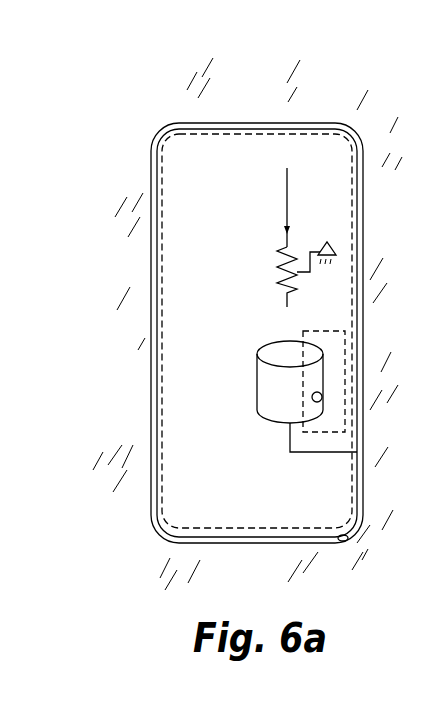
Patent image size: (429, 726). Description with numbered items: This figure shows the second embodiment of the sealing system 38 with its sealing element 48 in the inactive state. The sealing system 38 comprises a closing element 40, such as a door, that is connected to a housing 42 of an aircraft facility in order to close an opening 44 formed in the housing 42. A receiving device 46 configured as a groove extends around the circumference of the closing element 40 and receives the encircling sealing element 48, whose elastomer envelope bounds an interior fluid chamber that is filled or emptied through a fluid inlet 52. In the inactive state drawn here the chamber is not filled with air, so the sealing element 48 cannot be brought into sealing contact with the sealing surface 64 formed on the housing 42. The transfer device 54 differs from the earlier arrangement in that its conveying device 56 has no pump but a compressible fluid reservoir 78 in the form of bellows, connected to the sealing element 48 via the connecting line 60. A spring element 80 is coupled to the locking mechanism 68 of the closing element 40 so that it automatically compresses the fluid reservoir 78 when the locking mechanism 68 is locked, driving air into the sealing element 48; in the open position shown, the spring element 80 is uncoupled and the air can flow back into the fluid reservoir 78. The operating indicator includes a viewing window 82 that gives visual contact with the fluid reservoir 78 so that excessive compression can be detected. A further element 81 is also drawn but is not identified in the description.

The sealing system 38 is at (385, 122).
The closing element 40 is at (232, 157).
The housing 42 is at (322, 108).
The opening 44 is at (156, 127).
The receiving device 46 is at (352, 318).
The sealing element 48 is at (357, 237).
The fluid inlet 52 is at (350, 455).
The transfer device 54 is at (234, 312).
The conveying device 56 is at (304, 314).
The connecting line 60 is at (290, 443).
The sealing surface 64 is at (340, 545).
The locking mechanism 68 is at (295, 199).
The compressible fluid reservoir 78 is at (272, 389).
The spring element 80 is at (256, 274).
The ground symbol 81 is at (316, 250).
The viewing window 82 is at (330, 346).